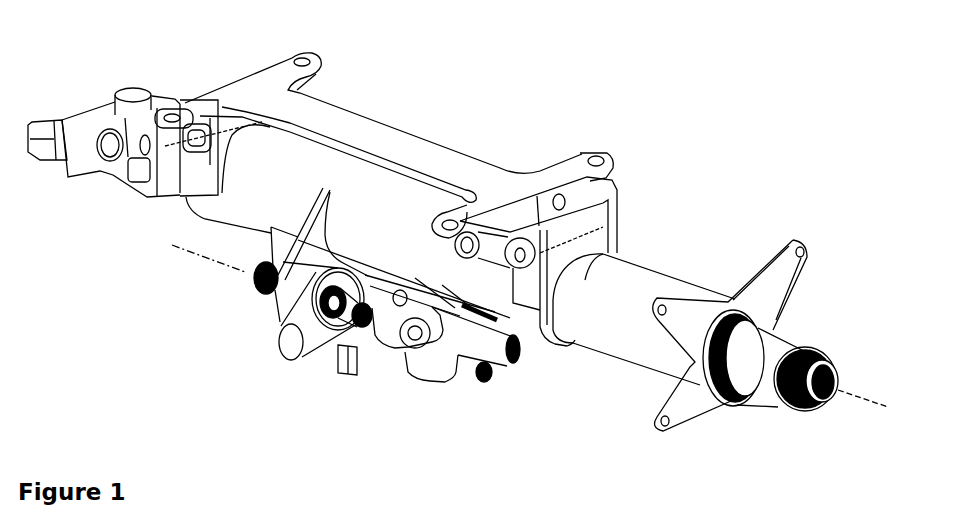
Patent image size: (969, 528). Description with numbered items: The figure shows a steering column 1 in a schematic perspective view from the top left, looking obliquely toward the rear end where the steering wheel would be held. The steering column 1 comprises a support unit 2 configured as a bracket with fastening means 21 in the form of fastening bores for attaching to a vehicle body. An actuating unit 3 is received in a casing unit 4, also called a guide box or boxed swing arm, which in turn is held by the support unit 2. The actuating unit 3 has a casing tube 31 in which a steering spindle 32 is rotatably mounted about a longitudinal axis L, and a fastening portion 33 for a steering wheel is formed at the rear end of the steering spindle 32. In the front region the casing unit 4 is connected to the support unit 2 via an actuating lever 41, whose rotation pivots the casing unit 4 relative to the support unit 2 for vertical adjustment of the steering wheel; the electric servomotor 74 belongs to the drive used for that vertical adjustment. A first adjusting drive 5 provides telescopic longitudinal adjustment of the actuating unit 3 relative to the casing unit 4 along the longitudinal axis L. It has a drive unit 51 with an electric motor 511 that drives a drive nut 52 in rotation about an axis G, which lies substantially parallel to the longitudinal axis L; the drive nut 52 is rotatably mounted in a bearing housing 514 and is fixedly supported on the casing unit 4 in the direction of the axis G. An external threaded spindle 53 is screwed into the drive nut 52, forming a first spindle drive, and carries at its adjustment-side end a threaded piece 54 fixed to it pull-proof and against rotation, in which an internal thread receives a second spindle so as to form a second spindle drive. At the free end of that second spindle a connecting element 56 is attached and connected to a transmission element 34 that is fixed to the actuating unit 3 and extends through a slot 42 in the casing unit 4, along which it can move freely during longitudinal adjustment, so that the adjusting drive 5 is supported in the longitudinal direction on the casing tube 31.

The steering column 1 is at (423, 57).
The support unit 2 is at (406, 150).
The fastening means 21 is at (177, 106).
The actuating unit 3 is at (680, 262).
The casing tube 31 is at (630, 283).
The steering spindle 32 is at (774, 340).
The fastening portion 33 is at (814, 354).
The casing unit 4 is at (237, 205).
The actuating lever 41 is at (578, 200).
The slot 42 is at (512, 340).
The first adjusting drive 5 is at (252, 355).
The drive unit 51 is at (292, 348).
The electric motor 511 is at (353, 373).
The bearing housing 514 is at (277, 343).
The drive nut 52 is at (320, 347).
The external threaded spindle 53 is at (268, 287).
The threaded piece 54 is at (350, 352).
The connecting element 56 is at (400, 335).
The transmission element 34 is at (437, 315).
The electric servomotor 74 is at (483, 347).
The axis G is at (230, 268).
The longitudinal axis L is at (880, 403).